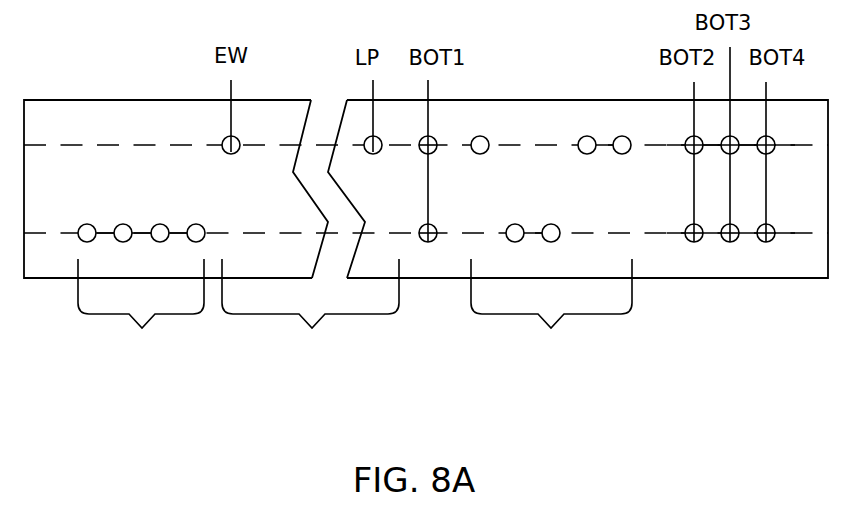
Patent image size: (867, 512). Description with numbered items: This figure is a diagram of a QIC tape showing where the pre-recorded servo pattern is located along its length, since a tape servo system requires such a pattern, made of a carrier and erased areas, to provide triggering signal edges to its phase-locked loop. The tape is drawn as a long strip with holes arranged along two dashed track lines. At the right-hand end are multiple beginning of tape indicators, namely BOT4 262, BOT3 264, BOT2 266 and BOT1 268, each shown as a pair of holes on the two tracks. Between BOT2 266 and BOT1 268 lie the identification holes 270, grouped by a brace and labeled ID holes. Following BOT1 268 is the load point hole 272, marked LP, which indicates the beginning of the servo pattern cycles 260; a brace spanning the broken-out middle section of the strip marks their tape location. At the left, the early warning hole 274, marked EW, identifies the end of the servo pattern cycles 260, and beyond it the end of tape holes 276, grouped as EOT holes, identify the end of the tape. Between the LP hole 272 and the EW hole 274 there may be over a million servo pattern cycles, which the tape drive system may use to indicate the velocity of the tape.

The servo pattern cycles 260 is at (312, 330).
The BOT4 indicator 262 is at (772, 242).
The BOT3 indicator 264 is at (729, 242).
The BOT2 indicator 266 is at (688, 242).
The BOT1 indicator 268 is at (428, 243).
The identification holes 270 is at (551, 330).
The load point hole 272 is at (368, 141).
The early warning hole 274 is at (229, 137).
The end of tape holes 276 is at (142, 330).